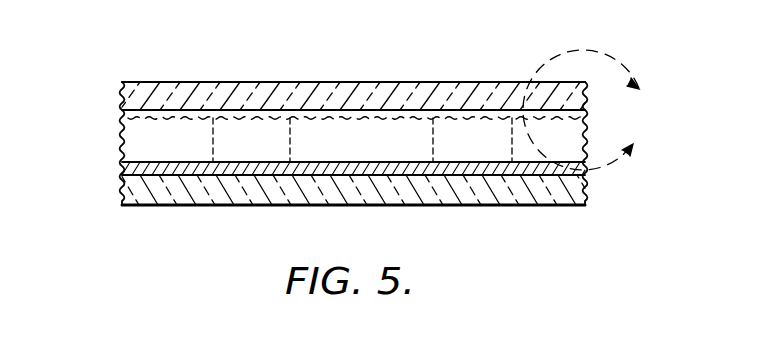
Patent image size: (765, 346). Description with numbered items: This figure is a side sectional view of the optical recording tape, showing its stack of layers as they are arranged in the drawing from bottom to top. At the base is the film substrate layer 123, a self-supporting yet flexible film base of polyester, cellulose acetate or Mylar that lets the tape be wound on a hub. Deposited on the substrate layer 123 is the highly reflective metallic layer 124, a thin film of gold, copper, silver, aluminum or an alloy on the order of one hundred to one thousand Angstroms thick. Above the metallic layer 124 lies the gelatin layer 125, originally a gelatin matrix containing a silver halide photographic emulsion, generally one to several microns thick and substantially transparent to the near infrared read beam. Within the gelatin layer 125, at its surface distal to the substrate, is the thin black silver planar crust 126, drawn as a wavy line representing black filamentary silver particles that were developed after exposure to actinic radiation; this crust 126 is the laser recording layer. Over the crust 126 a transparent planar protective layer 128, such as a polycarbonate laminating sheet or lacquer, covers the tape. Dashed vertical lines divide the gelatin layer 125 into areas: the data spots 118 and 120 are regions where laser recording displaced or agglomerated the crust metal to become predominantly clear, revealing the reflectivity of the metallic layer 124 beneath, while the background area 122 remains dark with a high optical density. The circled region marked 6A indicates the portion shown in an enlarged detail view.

The transparent planar protective layer 128 is at (123, 101).
The black silver planar crust 126 is at (175, 118).
The gelatin layer 125 is at (133, 146).
The highly reflective metallic layer 124 is at (122, 169).
The film substrate layer 123 is at (120, 197).
The data spot areas 118 is at (238, 123).
The background areas 122 is at (350, 120).
The data spot areas 120 is at (472, 122).
The section view indicator 6A is at (597, 110).